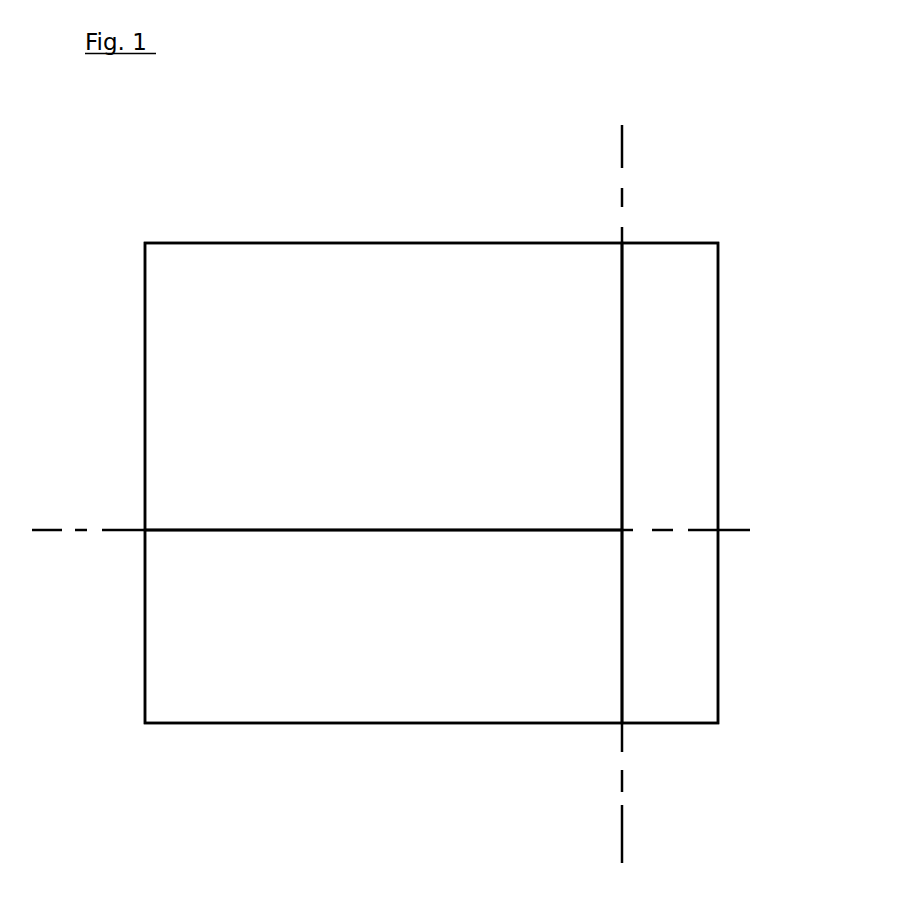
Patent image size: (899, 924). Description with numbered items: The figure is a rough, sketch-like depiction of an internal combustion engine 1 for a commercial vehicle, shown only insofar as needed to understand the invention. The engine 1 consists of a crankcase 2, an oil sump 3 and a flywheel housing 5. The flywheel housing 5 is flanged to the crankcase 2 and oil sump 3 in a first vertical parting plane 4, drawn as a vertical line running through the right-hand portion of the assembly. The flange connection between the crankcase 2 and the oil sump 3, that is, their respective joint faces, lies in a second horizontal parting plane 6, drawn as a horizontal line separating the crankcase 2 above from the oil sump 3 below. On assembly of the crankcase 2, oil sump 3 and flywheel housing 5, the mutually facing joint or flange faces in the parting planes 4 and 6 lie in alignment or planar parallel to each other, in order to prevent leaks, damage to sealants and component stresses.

The internal combustion engine 1 is at (508, 218).
The crankcase 2 is at (407, 458).
The oil sump 3 is at (461, 630).
The first vertical parting plane 4 is at (623, 147).
The flywheel housing 5 is at (680, 340).
The second horizontal parting plane 6 is at (80, 529).